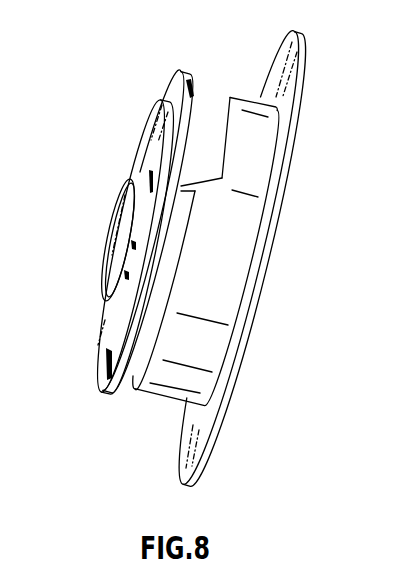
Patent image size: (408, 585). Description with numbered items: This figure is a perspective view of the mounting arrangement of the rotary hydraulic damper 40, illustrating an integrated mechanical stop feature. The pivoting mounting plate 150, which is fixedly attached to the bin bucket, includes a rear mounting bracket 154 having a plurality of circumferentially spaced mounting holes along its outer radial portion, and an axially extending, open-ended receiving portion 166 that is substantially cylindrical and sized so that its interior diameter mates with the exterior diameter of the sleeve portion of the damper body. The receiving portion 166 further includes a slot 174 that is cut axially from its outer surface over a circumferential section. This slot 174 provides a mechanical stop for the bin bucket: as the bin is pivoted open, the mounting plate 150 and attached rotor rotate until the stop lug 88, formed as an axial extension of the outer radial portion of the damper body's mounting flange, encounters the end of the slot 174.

The pivoting mounting plate 150 is at (310, 54).
The rear mounting bracket 154 is at (251, 316).
The receiving portion 166 is at (213, 337).
The slot 174 is at (236, 177).
The stop lug 88 is at (187, 142).
The rotary hydraulic damper 40 is at (92, 317).